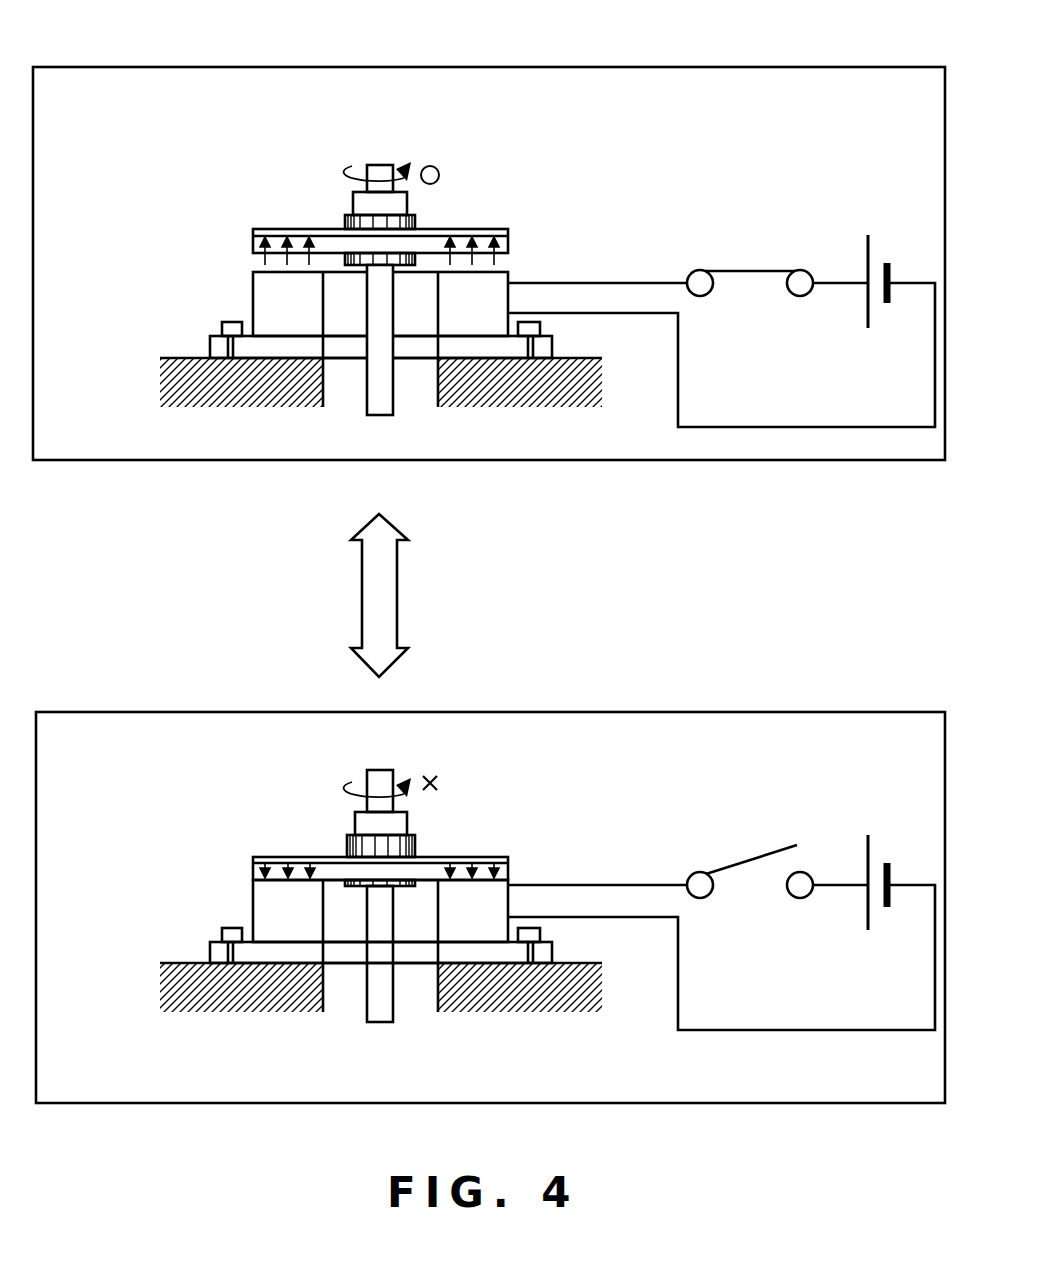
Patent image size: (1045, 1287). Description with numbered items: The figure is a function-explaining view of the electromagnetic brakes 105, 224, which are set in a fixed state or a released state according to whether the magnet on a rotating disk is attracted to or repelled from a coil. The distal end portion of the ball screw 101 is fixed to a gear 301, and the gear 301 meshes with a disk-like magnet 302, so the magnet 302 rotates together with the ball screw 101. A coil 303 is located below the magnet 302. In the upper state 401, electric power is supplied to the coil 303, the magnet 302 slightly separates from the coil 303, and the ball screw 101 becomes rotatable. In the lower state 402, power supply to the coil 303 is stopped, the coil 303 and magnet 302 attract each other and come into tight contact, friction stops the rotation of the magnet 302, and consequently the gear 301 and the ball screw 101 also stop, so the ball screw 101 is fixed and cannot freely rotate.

The upper state 401 is at (548, 72).
The lower state 402 is at (556, 716).
The electromagnetic brake 105 is at (515, 559).
The electromagnetic brake 224 is at (547, 567).
The ball screw 101 is at (386, 172).
The gear 301 is at (358, 210).
The magnet 302 is at (253, 243).
The coil 303 is at (262, 302).